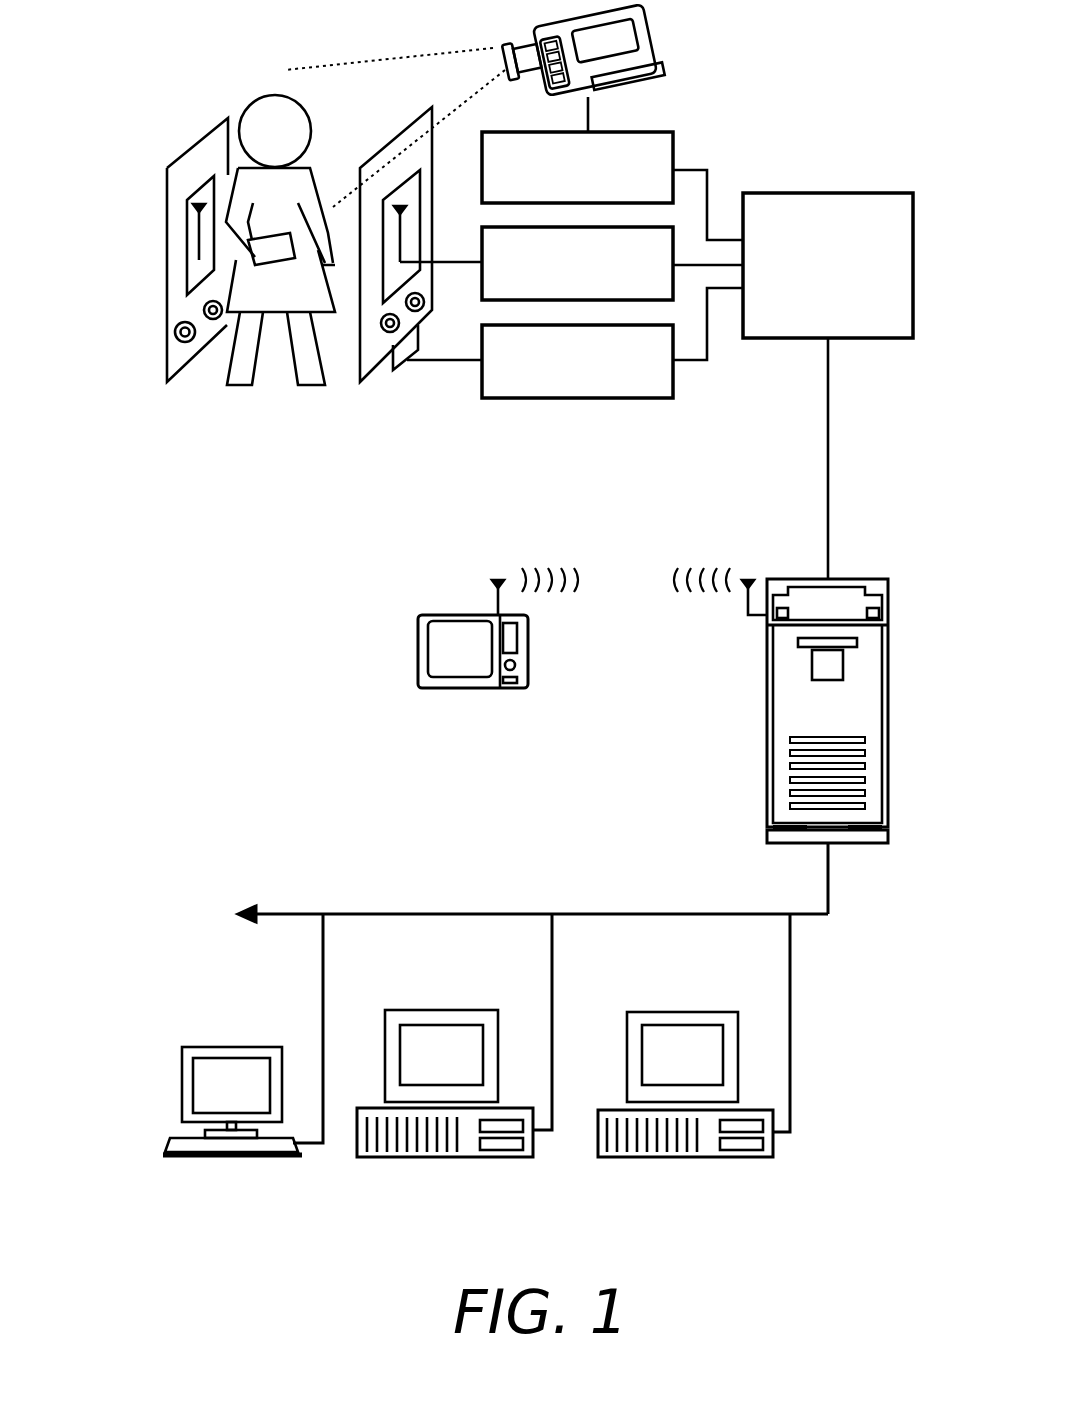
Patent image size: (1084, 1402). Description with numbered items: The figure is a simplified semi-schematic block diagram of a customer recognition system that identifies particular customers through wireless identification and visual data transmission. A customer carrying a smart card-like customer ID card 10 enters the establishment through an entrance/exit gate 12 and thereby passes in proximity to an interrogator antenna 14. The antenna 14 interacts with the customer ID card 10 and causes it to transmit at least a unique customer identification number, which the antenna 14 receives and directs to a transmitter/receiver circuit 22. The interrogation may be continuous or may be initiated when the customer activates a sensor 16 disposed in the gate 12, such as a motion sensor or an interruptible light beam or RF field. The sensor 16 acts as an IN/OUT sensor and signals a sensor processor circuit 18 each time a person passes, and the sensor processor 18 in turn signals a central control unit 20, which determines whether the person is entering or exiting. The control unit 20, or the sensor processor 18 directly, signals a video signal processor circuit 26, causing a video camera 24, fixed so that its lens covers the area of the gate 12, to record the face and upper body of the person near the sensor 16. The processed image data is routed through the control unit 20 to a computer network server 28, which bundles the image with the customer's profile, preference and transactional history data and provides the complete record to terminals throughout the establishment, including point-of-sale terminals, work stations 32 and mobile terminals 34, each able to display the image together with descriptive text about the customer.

The customer ID card 10 is at (280, 240).
The entrance/exit gate 12 is at (163, 360).
The interrogator antenna 14 is at (199, 230).
The sensor 16 is at (383, 337).
The sensor processor circuit 18 is at (550, 400).
The central control unit 20 is at (832, 192).
The transmitter/receiver circuit 22 is at (480, 257).
The video camera 24 is at (652, 50).
The video signal processor circuit 26 is at (482, 190).
The computer network server 28 is at (788, 580).
The work station 32 is at (243, 1047).
The mobile terminal 34 is at (448, 615).